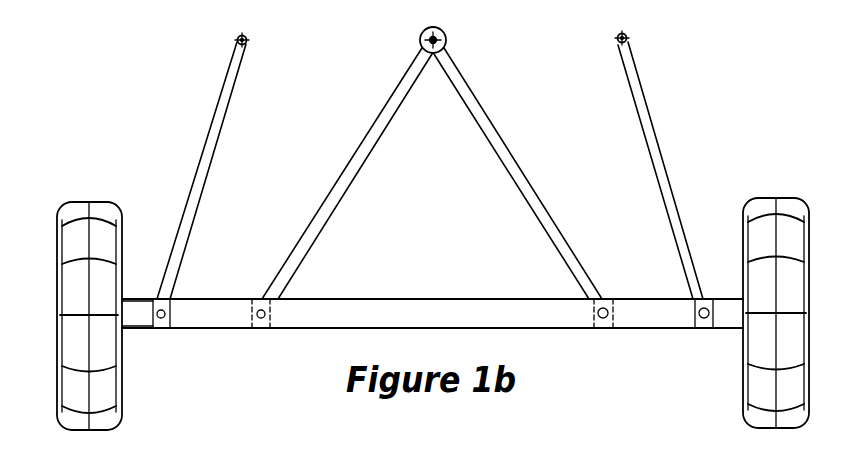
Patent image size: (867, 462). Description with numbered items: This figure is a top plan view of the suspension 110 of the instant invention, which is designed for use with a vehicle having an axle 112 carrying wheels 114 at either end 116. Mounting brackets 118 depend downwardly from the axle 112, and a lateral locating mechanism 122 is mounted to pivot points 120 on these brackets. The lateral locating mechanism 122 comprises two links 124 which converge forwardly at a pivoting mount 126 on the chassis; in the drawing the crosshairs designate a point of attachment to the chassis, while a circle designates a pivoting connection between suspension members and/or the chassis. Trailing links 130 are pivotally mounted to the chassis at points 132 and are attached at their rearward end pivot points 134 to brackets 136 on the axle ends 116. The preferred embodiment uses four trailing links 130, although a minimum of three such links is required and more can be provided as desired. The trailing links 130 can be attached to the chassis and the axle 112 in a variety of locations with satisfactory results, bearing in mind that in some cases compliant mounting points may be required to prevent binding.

The suspension 110 is at (432, 312).
The axle 112 is at (520, 313).
The wheels 114 is at (103, 210).
The axle ends 116 is at (138, 313).
The mounting brackets 118 is at (255, 303).
The pivot points 120 is at (265, 318).
The lateral locating mechanism 122 is at (432, 163).
The links 124 is at (472, 108).
The pivoting mount 126 is at (420, 41).
The trailing links 130 is at (215, 135).
The points 132 is at (247, 45).
The rearward end pivot points 134 is at (161, 330).
The brackets 136 is at (700, 322).